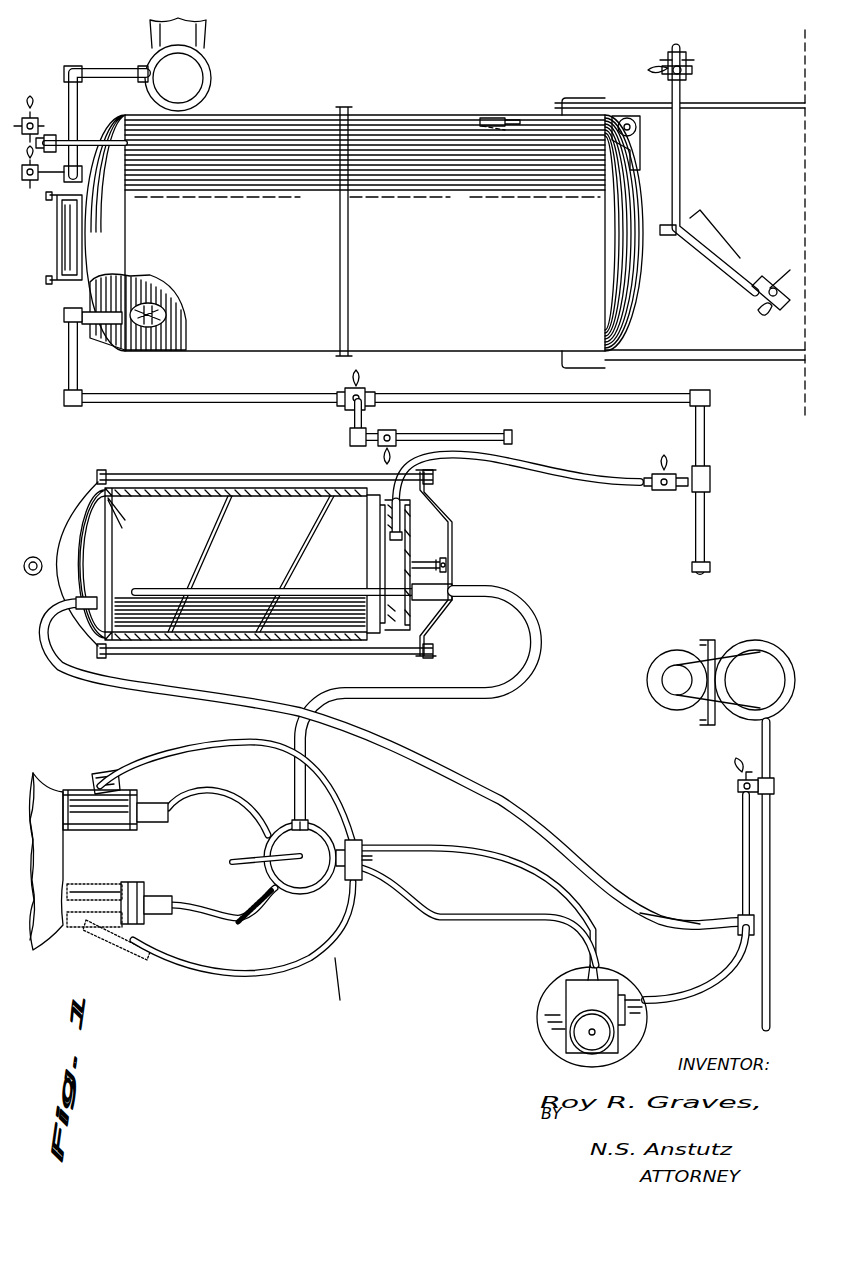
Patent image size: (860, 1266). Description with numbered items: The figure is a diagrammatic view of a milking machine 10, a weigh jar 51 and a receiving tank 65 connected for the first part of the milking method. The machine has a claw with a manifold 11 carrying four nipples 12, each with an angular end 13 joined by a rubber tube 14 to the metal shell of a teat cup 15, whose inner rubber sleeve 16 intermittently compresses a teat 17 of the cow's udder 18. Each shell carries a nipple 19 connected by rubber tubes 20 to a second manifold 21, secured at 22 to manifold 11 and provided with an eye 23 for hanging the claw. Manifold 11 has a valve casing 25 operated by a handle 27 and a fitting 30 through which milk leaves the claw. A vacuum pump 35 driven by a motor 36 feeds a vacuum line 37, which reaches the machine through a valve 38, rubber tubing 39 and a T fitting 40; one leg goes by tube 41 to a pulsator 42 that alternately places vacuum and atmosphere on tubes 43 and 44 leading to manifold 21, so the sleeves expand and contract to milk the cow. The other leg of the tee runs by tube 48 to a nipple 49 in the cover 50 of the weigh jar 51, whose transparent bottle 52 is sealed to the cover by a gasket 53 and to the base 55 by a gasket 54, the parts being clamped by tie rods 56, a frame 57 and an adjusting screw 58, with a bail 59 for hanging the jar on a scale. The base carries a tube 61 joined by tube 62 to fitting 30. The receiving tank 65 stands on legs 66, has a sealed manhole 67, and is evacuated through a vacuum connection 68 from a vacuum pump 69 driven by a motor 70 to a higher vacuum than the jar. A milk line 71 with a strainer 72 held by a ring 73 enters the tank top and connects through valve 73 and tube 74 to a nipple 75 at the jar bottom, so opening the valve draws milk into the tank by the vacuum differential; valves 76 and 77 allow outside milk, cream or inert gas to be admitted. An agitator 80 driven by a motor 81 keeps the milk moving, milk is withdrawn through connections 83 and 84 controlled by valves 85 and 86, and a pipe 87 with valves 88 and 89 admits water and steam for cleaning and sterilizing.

The milking machine 10 is at (340, 966).
The manifold 11 is at (302, 895).
The nipples 12 is at (272, 892).
The angular end 13 is at (248, 910).
The rubber tube 14 is at (184, 812).
The teat cup 15 is at (104, 830).
The rubber sleeve 16 is at (88, 884).
The teat 17 is at (84, 928).
The udder 18 is at (40, 935).
The nipple 19 is at (100, 778).
The rubber tubes 20 is at (160, 756).
The manifold 21 is at (360, 845).
The securing point 22 is at (340, 848).
The eye 23 is at (392, 870).
The valve casing 25 is at (293, 812).
The handle 27 is at (238, 858).
The fitting 30 is at (305, 824).
The vacuum pump 35 is at (755, 650).
The motor 36 is at (675, 652).
The vacuum line 37 is at (772, 880).
The valve 38 is at (736, 774).
The rubber tubing 39 is at (742, 862).
The T fitting 40 is at (736, 918).
The tube 41 is at (700, 990).
The pulsator 42 is at (568, 1000).
The tube 43 is at (460, 920).
The tube 44 is at (442, 845).
The tube 48 is at (535, 818).
The nipple 49 is at (98, 598).
The cover 50 is at (82, 548).
The weigh jar 51 is at (92, 484).
The transparent bottle 52 is at (212, 494).
The gasket 53 is at (112, 505).
The gasket 54 is at (378, 506).
The base 55 is at (410, 540).
The tie rods 56 is at (240, 474).
The frame 57 is at (452, 556).
The adjusting screw 58 is at (430, 560).
The bail 59 is at (40, 540).
The tube 61 is at (268, 588).
The tube 62 is at (538, 640).
The receiving tank 65 is at (290, 115).
The legs 66 is at (752, 103).
The manhole 67 is at (57, 245).
The vacuum connection 68 is at (68, 108).
The vacuum pump 69 is at (205, 78).
The motor 70 is at (150, 26).
The milk line 71 is at (66, 362).
The strainer 72 is at (158, 350).
The valve 73 is at (148, 328).
The tube 74 is at (570, 488).
The nipple 75 is at (394, 540).
The valve 76 is at (368, 390).
The valve 77 is at (398, 450).
The agitator 80 is at (500, 126).
The motor 81 is at (625, 116).
The connection 83 is at (681, 182).
The connection 84 is at (712, 250).
The valve 85 is at (688, 72).
The valve 86 is at (772, 280).
The pipe 87 is at (96, 140).
The valve 88 is at (32, 96).
The valve 89 is at (30, 188).